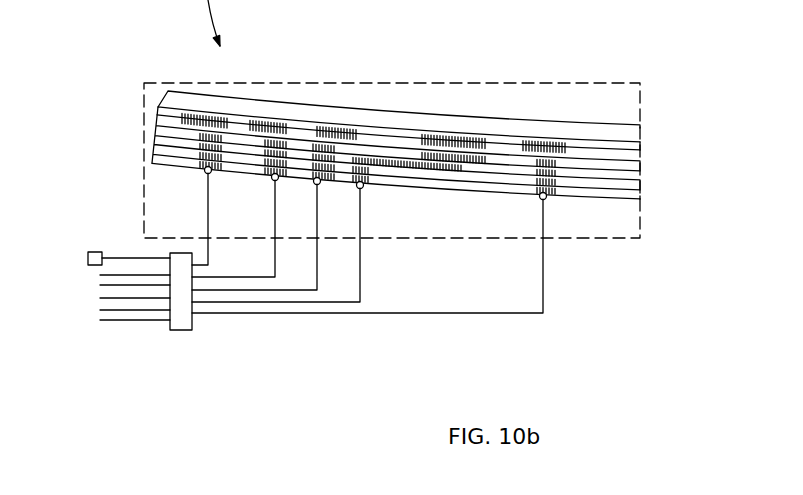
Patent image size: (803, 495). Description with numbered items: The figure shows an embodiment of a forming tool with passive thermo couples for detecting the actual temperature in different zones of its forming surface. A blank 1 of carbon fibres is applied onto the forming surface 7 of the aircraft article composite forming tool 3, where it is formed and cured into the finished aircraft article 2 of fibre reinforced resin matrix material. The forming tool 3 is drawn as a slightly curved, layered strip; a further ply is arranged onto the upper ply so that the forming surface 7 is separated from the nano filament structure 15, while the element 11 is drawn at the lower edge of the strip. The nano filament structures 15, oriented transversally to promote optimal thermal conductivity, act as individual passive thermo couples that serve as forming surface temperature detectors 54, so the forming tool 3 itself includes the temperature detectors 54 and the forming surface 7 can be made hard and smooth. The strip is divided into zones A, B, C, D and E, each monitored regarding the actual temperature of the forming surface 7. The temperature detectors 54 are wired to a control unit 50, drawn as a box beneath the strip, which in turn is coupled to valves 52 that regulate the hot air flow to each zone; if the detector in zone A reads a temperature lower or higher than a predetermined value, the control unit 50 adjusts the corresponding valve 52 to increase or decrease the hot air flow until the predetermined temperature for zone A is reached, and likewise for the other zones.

The blank 1 is at (446, 112).
The aircraft article 2 is at (495, 122).
The composite forming tool 3 is at (200, 214).
The forming surface 7 is at (265, 117).
The edge of carrier strip 11 is at (380, 196).
The nano filament structure 15 is at (178, 120).
The control unit 50 is at (186, 332).
The valve 52 is at (92, 268).
The temperature detector 54 is at (238, 100).
The zone A is at (214, 107).
The zone B is at (291, 118).
The zone C is at (350, 117).
The zone D is at (466, 130).
The zone E is at (556, 133).